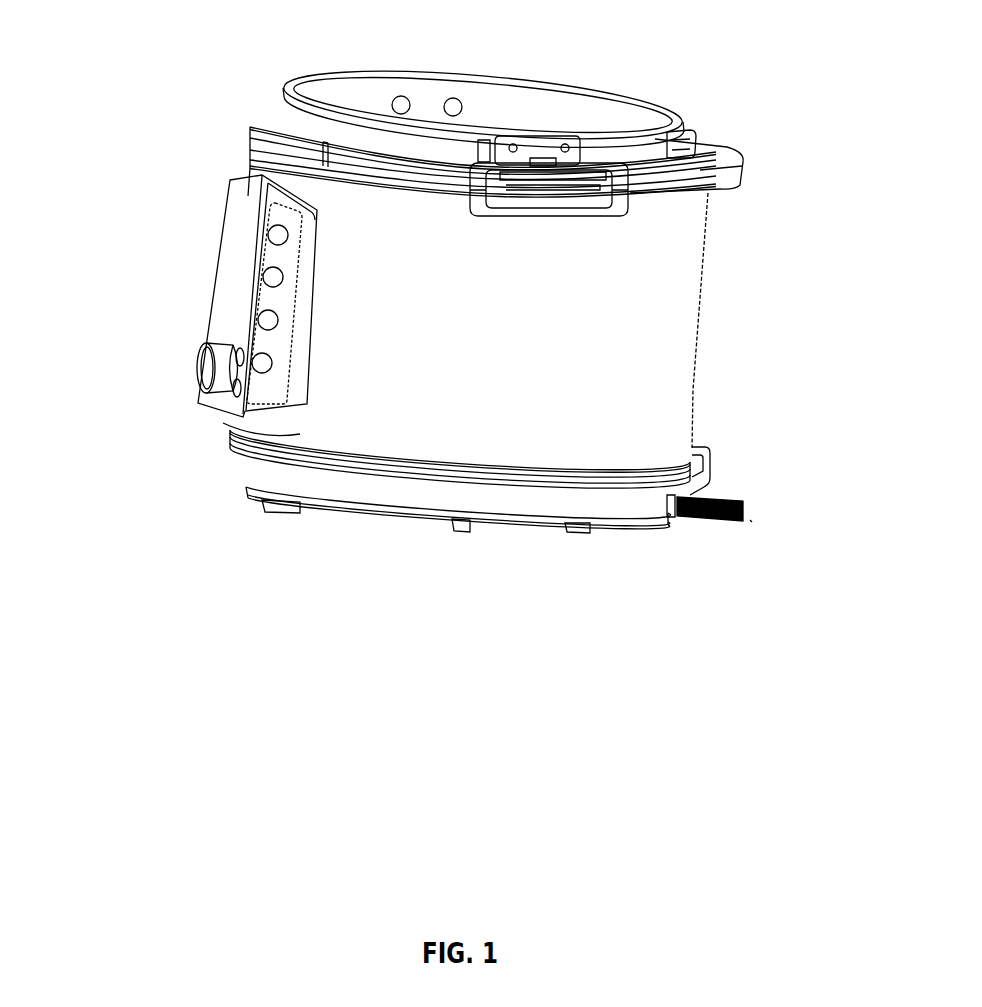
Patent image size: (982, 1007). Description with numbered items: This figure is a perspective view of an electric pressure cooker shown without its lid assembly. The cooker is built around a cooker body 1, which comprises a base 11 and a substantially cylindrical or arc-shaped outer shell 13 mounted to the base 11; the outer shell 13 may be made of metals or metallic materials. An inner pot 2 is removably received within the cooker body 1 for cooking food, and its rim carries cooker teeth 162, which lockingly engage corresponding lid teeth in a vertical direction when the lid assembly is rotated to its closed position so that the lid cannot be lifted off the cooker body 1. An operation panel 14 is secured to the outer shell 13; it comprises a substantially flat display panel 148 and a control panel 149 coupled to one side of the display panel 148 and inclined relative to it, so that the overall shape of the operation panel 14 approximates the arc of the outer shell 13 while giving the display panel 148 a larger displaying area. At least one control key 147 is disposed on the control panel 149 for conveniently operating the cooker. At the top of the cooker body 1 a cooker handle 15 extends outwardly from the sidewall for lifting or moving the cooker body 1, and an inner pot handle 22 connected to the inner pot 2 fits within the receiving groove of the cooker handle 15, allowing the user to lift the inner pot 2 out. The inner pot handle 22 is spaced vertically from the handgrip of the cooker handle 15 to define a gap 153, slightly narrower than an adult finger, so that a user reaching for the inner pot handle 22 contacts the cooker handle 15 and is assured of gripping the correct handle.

The cooker body 1 is at (573, 437).
The inner pot 2 is at (522, 106).
The base 11 is at (518, 506).
The outer shell 13 is at (626, 376).
The operation panel 14 is at (226, 224).
The cooker handle 15 is at (560, 263).
The inner pot handle 22 is at (583, 177).
The control key 147 is at (265, 367).
The display panel 148 is at (224, 325).
The control panel 149 is at (277, 302).
The gap 153 is at (578, 196).
The cooker teeth 162 is at (273, 110).